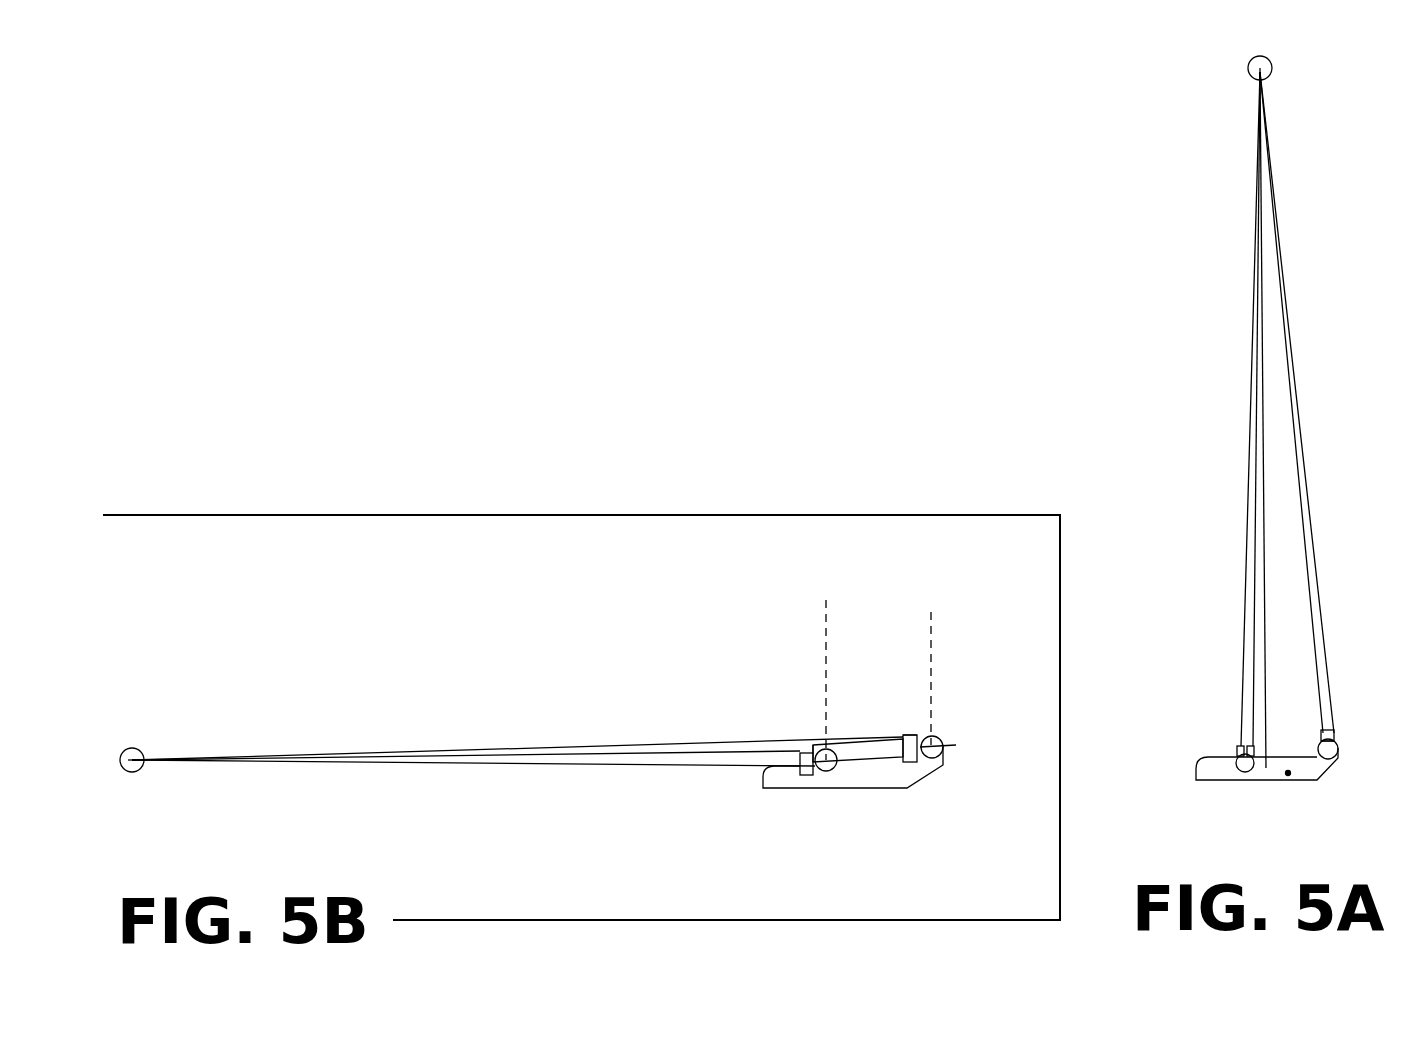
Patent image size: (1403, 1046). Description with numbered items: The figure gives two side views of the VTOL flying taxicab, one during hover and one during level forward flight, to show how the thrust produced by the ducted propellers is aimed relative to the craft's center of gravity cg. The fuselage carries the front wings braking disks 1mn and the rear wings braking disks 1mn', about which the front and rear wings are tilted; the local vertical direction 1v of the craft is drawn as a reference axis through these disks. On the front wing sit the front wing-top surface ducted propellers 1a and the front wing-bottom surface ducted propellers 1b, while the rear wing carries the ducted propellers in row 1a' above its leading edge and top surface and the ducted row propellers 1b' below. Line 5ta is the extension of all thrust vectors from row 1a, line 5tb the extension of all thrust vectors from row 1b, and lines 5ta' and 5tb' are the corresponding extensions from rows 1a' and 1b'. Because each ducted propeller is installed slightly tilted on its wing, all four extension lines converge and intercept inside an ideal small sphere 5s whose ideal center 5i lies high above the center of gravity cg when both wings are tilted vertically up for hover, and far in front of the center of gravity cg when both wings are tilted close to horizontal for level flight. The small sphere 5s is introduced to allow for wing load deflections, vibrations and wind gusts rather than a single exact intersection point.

In FIG. 5A, the small sphere 5s is at (1250, 76).
In FIG. 5B, the small sphere 5s is at (137, 773).
In FIG. 5A, the ideal center of the ideal small sphere 5i is at (1272, 78).
In FIG. 5B, the ideal center of the ideal small sphere 5i is at (140, 752).
In FIG. 5A, the line extension of all thrust vectors from all ducted propellers in row 1a 5ta is at (1321, 402).
In FIG. 5B, the line extension of all thrust vectors from all ducted propellers in row 1a 5ta is at (466, 704).
In FIG. 5A, the line extension of all thrust vectors from all ducted propellers in row 1a' 5ta' is at (1328, 402).
In FIG. 5B, the line extension of all thrust vectors from all ducted propellers in row 1a' 5ta' is at (517, 704).
In FIG. 5A, the line extension of all thrust vectors from all ducted propellers in row 1b 5tb is at (1217, 409).
In FIG. 5B, the line extension of all thrust vectors from all ducted propellers in row 1b 5tb is at (473, 806).
In FIG. 5A, the line extension of all thrust vectors from all ducted propellers in row 1b' 5tb' is at (1241, 409).
In FIG. 5B, the line extension of all thrust vectors from all ducted propellers in row 1b' 5tb' is at (858, 672).
In FIG. 5A, the local vertical direction 1v is at (1267, 643).
In FIG. 5B, the local vertical direction 1v is at (825, 600).
In FIG. 5A, the front wing-top surface ducted propellers 1a is at (1278, 728).
In FIG. 5B, the front wing-top surface ducted propellers 1a is at (782, 718).
In FIG. 5A, the two rows ducted-propellers above leading edge rear-wing and top surface of 1w' 1a' is at (1355, 708).
In FIG. 5B, the two rows ducted-propellers above leading edge rear-wing and top surface of 1w' 1a' is at (934, 799).
In FIG. 5A, the front wing-bottom surface ducted propellers 1b is at (1208, 727).
In FIG. 5B, the front wing-bottom surface ducted propellers 1b is at (799, 810).
In FIG. 5A, the ducted row propellers 1b' is at (1303, 698).
In FIG. 5B, the ducted row propellers 1b' is at (952, 684).
In FIG. 5A, the front wings braking disks 1mn is at (1300, 793).
In FIG. 5B, the front wings braking disks 1mn is at (786, 692).
In FIG. 5B, the rear wings braking disks 1mn' is at (985, 723).
In FIG. 5A, the center of gravity cg is at (1290, 778).
In FIG. 5B, the center of gravity cg is at (870, 777).